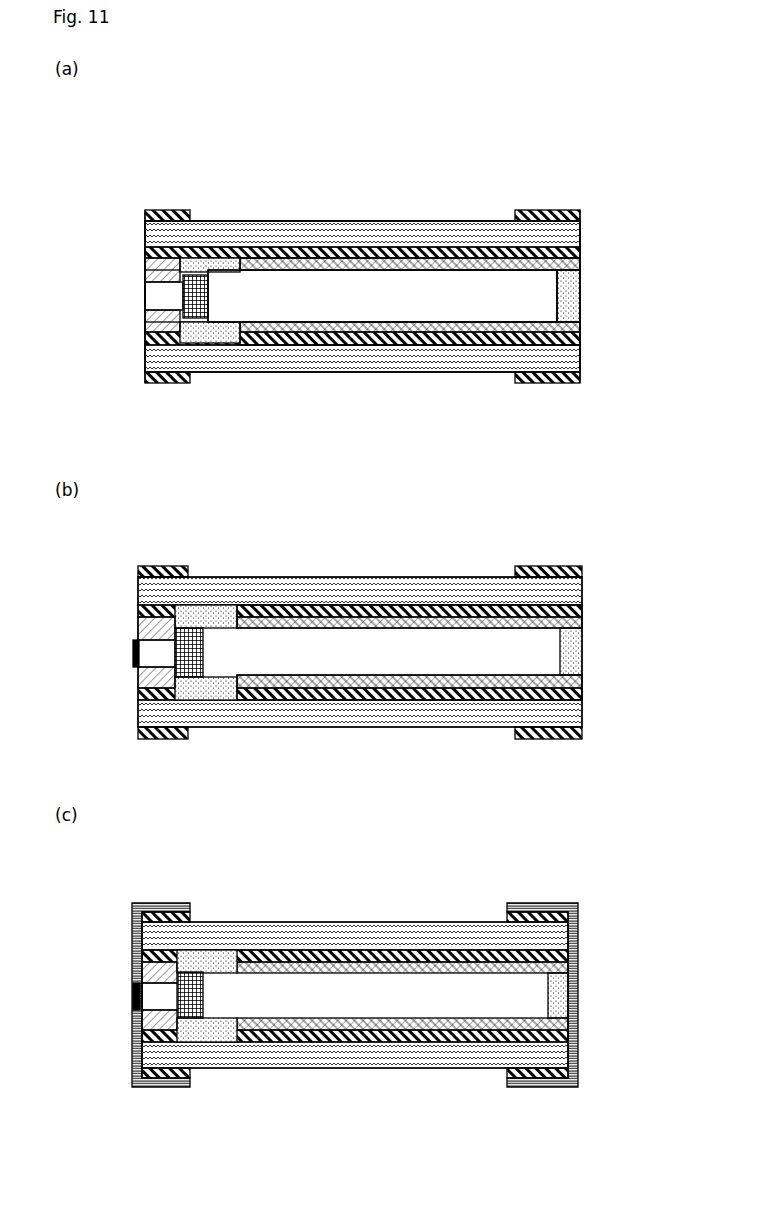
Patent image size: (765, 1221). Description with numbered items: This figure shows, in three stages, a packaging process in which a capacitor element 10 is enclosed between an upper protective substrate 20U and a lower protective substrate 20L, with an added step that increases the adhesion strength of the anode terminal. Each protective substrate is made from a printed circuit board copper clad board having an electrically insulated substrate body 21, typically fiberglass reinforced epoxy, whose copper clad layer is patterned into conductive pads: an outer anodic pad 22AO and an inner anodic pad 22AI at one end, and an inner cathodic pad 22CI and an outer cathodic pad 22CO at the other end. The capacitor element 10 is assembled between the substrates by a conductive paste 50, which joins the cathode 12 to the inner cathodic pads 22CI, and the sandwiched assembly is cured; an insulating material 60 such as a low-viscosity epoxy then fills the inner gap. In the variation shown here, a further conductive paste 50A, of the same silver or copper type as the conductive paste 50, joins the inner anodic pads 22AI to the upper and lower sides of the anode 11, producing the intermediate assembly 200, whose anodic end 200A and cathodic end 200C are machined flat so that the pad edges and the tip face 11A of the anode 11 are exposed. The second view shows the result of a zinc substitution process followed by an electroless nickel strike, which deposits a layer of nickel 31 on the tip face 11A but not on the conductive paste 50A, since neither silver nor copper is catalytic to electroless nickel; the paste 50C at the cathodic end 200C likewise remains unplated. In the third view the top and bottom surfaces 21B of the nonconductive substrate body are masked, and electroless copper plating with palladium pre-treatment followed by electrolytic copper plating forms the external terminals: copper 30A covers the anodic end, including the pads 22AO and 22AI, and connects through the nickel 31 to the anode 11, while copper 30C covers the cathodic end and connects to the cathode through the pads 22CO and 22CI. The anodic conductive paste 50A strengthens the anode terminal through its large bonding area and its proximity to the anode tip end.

The intermediate assembly 200 is at (178, 102).
The first end portion of module 200A is at (120, 252).
The second end portion of module 200C is at (603, 285).
The upper protective substrate 20U is at (375, 160).
The lower protective substrate 20L is at (343, 400).
The substrate body 21 is at (382, 226).
The top and bottom surfaces of the substrate body 21B is at (360, 935).
The outer anodic copper pad 22AO is at (190, 212).
The inner anodic conductive pad 22AI is at (218, 256).
The inner electrode layer 22CI is at (465, 250).
The outer cathodic copper pad 22CO is at (555, 212).
The capacitor element 10 is at (415, 297).
The internal space 12 is at (400, 288).
The anode 11 is at (147, 292).
The tip face of the anode 11A is at (143, 305).
The anodic conductive paste 50A is at (150, 272).
The second sealing member 50C is at (582, 690).
The conductive paste 50 is at (433, 318).
The insulating material 60 is at (218, 343).
The electroless copper at anodic end 30A is at (130, 930).
The electroless copper at cathodic end 30C is at (582, 965).
The layer of nickel 31 is at (132, 655).